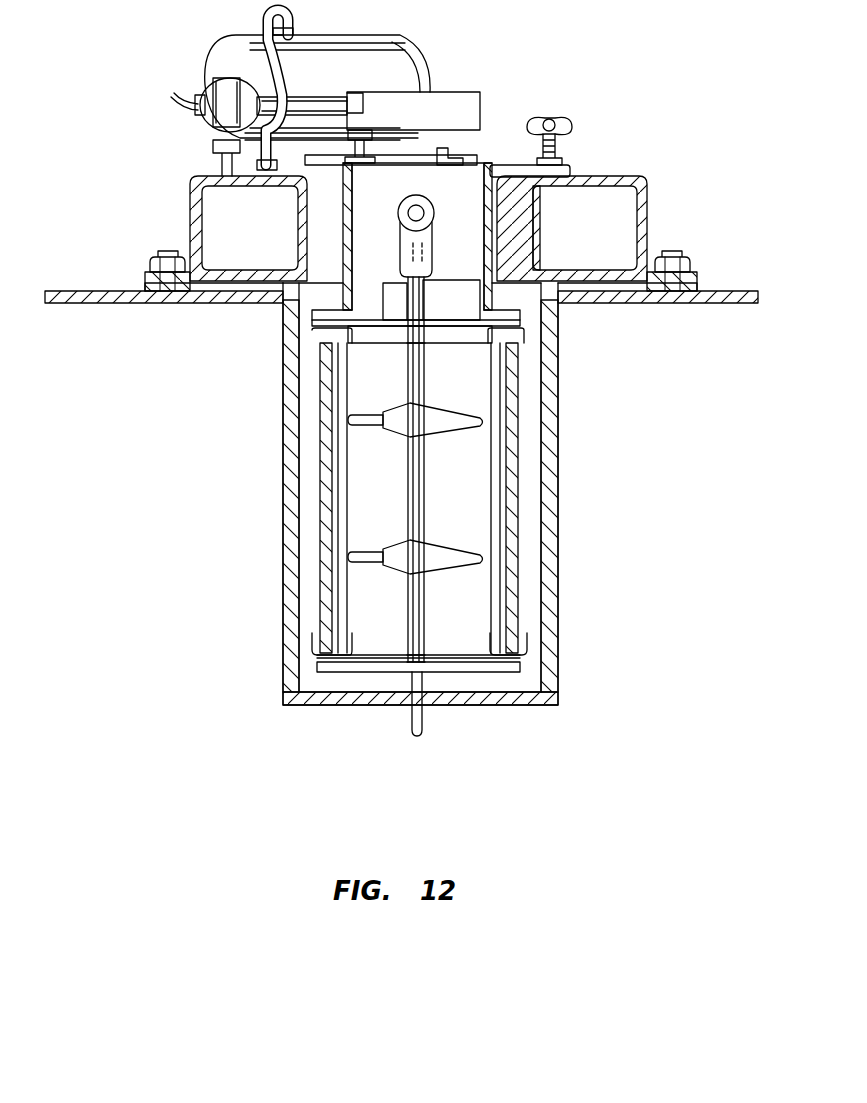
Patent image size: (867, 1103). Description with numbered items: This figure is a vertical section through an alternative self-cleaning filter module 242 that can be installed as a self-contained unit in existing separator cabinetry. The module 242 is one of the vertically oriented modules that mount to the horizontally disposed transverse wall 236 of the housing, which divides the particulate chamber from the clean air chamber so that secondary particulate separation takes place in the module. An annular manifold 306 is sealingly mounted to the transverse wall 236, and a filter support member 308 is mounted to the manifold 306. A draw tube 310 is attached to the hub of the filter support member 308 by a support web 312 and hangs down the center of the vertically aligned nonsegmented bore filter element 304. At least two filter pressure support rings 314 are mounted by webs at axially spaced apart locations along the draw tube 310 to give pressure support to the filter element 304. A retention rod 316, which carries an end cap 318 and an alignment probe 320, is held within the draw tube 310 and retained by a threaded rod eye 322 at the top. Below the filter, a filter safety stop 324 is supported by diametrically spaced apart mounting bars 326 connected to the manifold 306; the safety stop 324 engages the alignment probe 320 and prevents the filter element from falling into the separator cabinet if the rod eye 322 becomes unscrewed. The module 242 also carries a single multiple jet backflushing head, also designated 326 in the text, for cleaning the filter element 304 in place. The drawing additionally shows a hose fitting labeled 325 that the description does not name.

The transverse wall 236 is at (110, 303).
The module 242 is at (575, 478).
The filter element 304 is at (520, 572).
The annular manifold 306 is at (192, 190).
The filter support member 308 is at (327, 277).
The draw tube 310 is at (406, 503).
The support web 312 is at (460, 318).
The filter pressure support rings 314 is at (350, 420).
The retention rod 316 is at (410, 585).
The end cap 318 is at (348, 672).
The alignment probe 320 is at (422, 732).
The threaded rod eye 322 is at (425, 195).
The filter safety stop 324 is at (526, 700).
The hose 325 is at (315, 38).
The mounting bars 326 is at (452, 92).